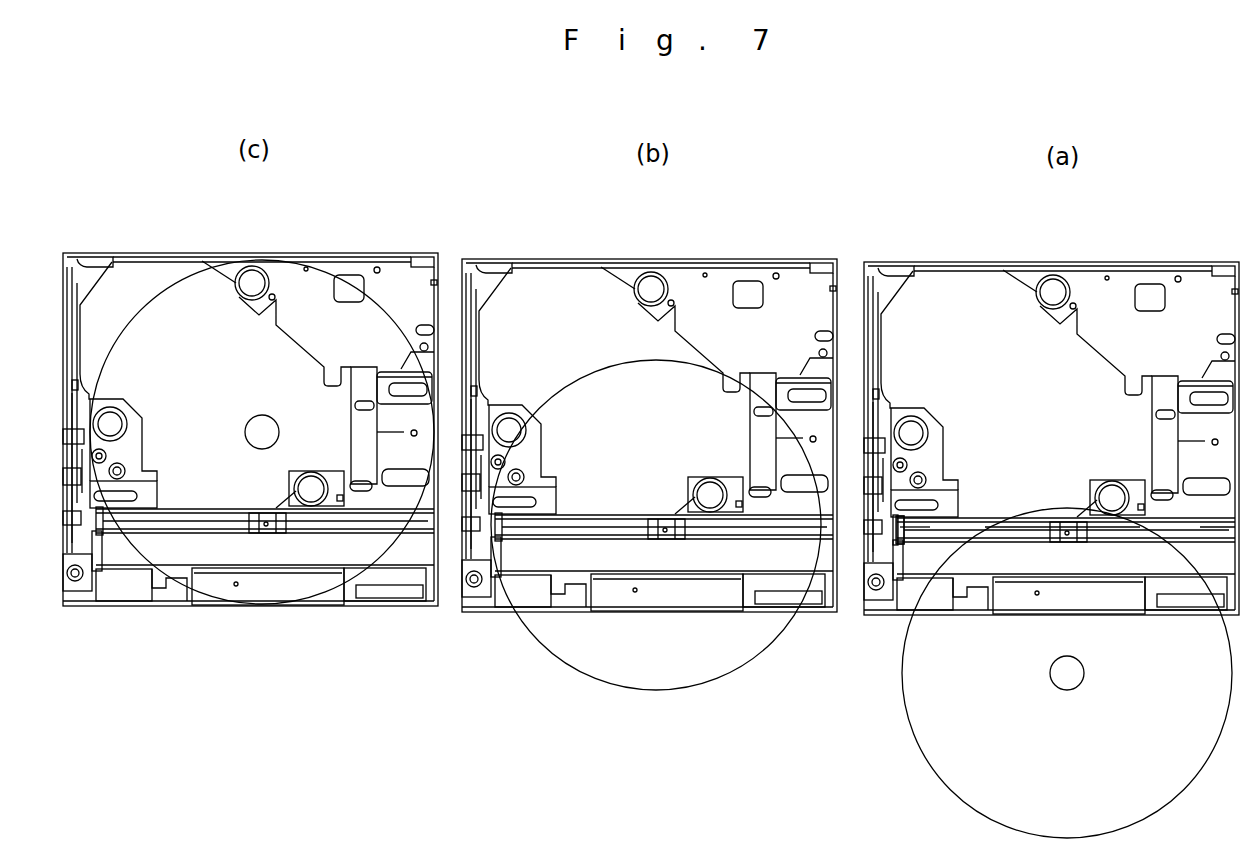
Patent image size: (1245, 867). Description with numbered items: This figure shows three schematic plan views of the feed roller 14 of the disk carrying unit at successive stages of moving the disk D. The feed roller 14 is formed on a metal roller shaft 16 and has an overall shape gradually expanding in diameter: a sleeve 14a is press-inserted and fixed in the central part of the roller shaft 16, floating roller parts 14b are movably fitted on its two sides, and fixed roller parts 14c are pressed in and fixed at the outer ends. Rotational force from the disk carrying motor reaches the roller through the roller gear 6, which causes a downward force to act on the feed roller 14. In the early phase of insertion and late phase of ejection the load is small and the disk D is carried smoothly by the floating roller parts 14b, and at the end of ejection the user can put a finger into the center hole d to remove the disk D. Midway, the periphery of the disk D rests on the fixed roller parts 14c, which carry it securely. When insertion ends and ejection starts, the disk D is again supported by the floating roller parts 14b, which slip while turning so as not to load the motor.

The feed roller 14 is at (1030, 528).
The sleeve 14a is at (1053, 538).
The floating roller parts 14b is at (185, 518).
The fixed roller parts 14c is at (112, 518).
The roller gear 6 is at (897, 530).
The roller shaft 16 is at (895, 528).
The disk D is at (270, 606).
The center hole d is at (1085, 683).